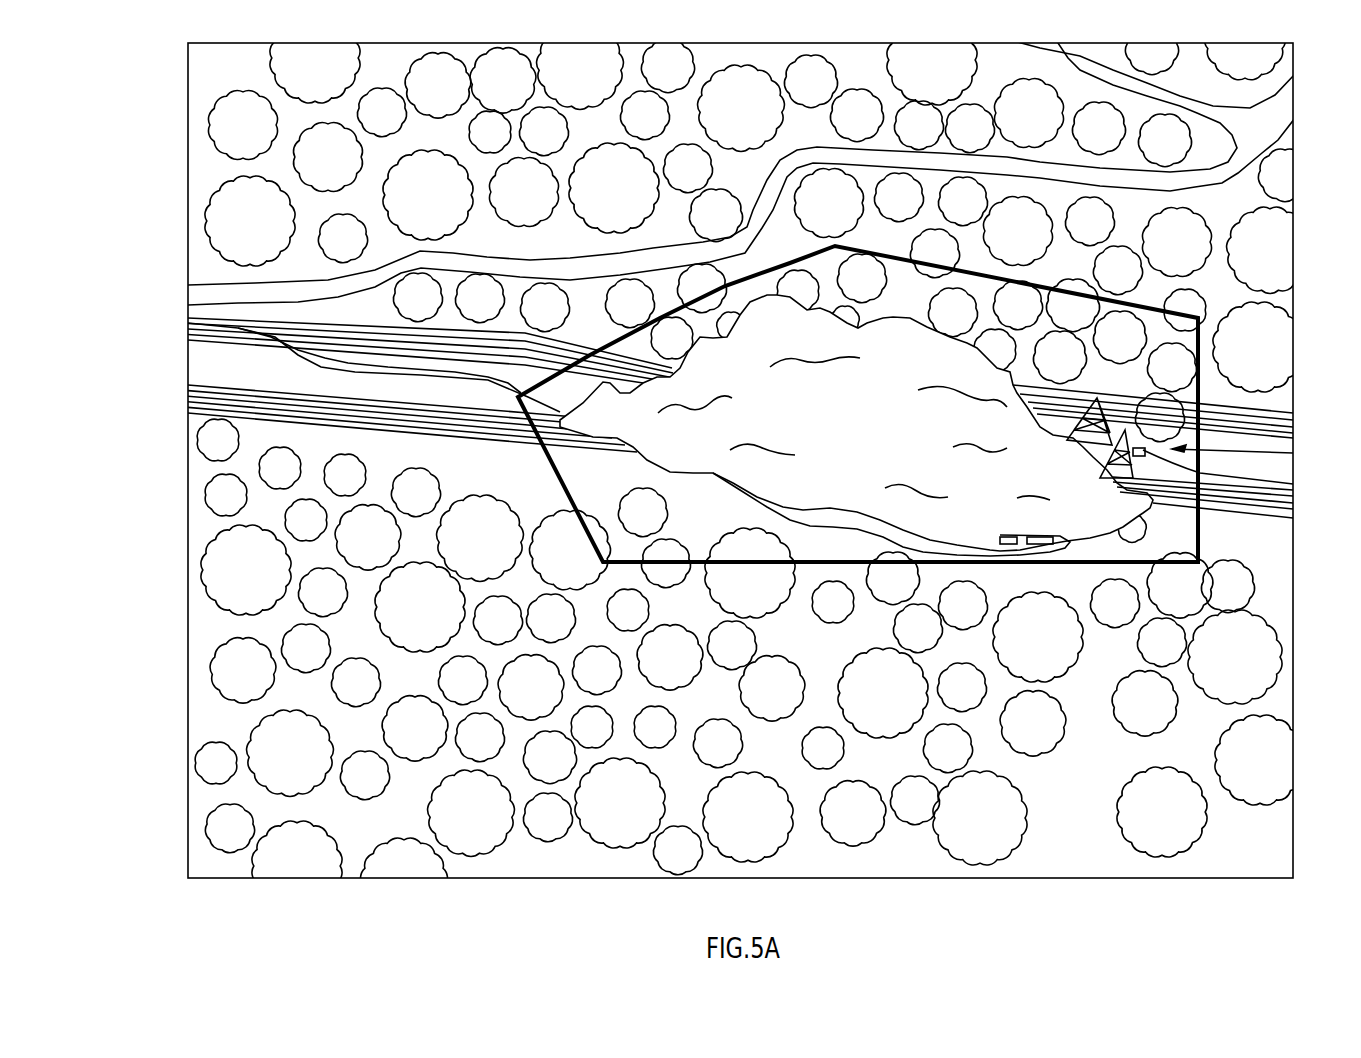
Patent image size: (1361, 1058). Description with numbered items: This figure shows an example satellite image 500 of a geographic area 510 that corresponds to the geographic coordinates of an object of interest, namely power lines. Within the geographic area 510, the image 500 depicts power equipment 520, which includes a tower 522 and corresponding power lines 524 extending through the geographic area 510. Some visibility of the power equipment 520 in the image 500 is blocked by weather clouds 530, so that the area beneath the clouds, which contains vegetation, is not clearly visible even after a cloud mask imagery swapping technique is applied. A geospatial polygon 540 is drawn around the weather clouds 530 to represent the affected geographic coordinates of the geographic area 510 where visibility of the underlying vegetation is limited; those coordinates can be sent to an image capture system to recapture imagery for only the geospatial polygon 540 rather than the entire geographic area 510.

The image 500 is at (106, 110).
The geographic area 510 is at (212, 178).
The power equipment 520 is at (1293, 453).
The tower 522 is at (1293, 484).
The power lines 524 is at (465, 437).
The weather clouds 530 is at (874, 434).
The geospatial polygon 540 is at (1200, 517).